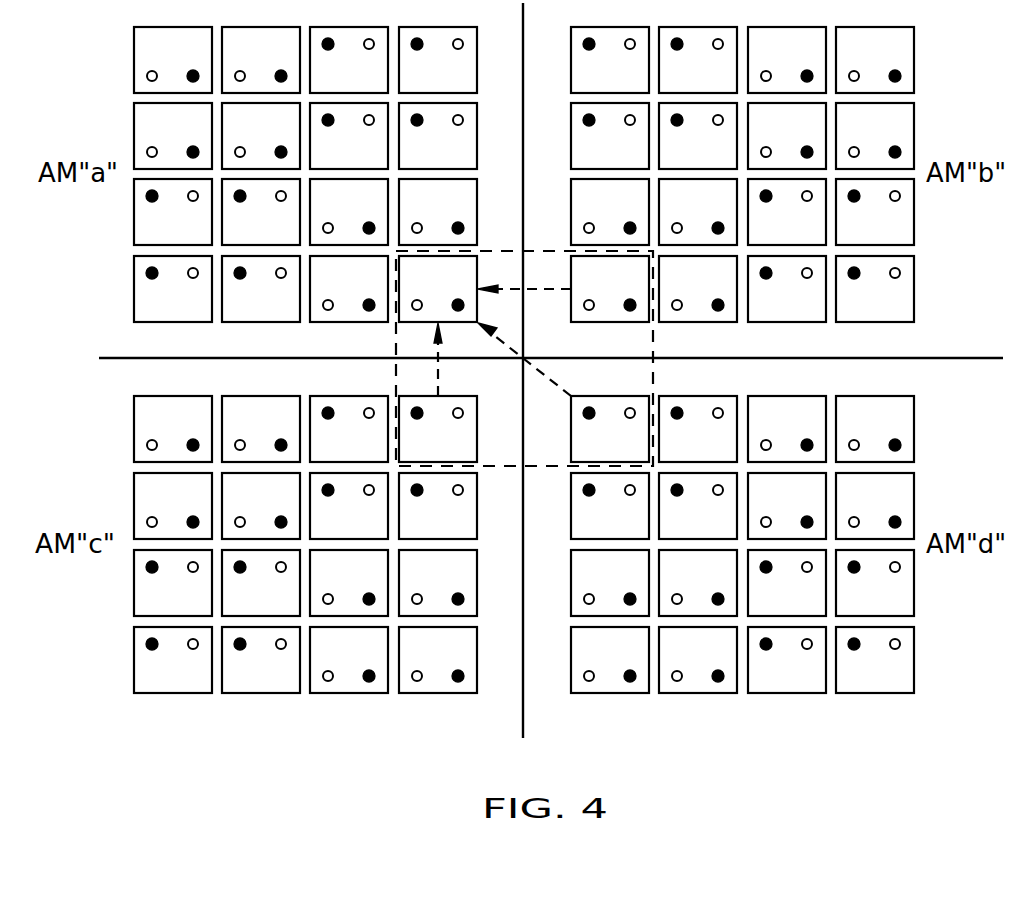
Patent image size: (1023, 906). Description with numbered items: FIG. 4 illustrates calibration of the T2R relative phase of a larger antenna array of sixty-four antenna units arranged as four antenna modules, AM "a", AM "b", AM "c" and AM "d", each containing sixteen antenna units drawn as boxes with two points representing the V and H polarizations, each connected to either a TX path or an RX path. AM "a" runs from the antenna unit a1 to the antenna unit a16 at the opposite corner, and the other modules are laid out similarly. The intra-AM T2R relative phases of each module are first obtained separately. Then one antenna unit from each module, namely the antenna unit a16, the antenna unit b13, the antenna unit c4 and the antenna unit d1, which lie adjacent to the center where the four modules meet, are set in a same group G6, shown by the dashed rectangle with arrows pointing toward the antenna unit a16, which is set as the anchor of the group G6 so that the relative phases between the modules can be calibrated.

The group G6 is at (508, 250).
The antenna unit a1 is at (173, 60).
The antenna unit a16 is at (438, 289).
The antenna unit b13 is at (610, 289).
The antenna unit c4 is at (438, 429).
The antenna unit d1 is at (610, 429).